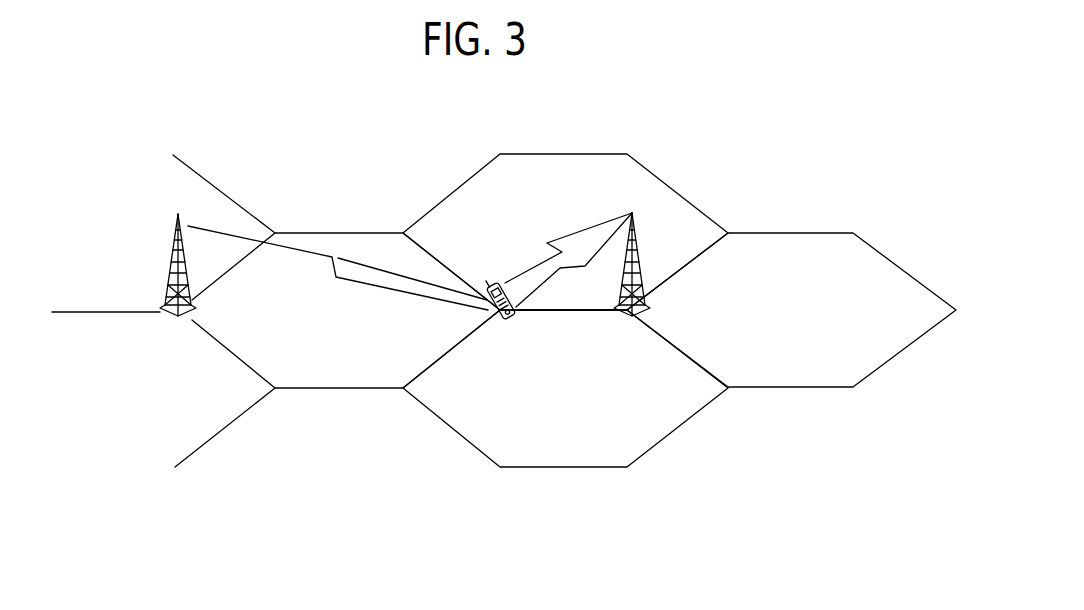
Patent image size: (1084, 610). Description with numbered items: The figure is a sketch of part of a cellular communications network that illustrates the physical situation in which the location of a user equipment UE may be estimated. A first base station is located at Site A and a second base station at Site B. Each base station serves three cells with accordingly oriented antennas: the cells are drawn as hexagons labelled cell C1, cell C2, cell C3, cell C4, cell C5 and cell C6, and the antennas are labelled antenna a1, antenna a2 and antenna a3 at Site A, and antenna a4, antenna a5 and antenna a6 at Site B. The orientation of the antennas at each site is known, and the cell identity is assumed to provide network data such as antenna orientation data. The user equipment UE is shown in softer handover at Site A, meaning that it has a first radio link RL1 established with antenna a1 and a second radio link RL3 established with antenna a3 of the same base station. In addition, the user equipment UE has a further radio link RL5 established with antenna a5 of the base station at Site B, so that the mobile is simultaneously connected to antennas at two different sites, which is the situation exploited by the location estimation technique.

The cell C1 is at (563, 455).
The cell C2 is at (793, 240).
The cell C3 is at (551, 160).
The cell C4 is at (207, 428).
The cell C5 is at (335, 380).
The cell C6 is at (197, 187).
The antenna a1 is at (628, 210).
The antenna a2 is at (638, 210).
The antenna a3 is at (628, 206).
The antenna a4 is at (175, 210).
The antenna a5 is at (185, 213).
The antenna a6 is at (178, 207).
The first radio link RL1 is at (543, 260).
The second radio link RL3 is at (537, 297).
The radio link RL5 is at (278, 260).
The user equipment UE is at (510, 323).
The first base station site Site A is at (648, 313).
The second base station site Site B is at (162, 316).